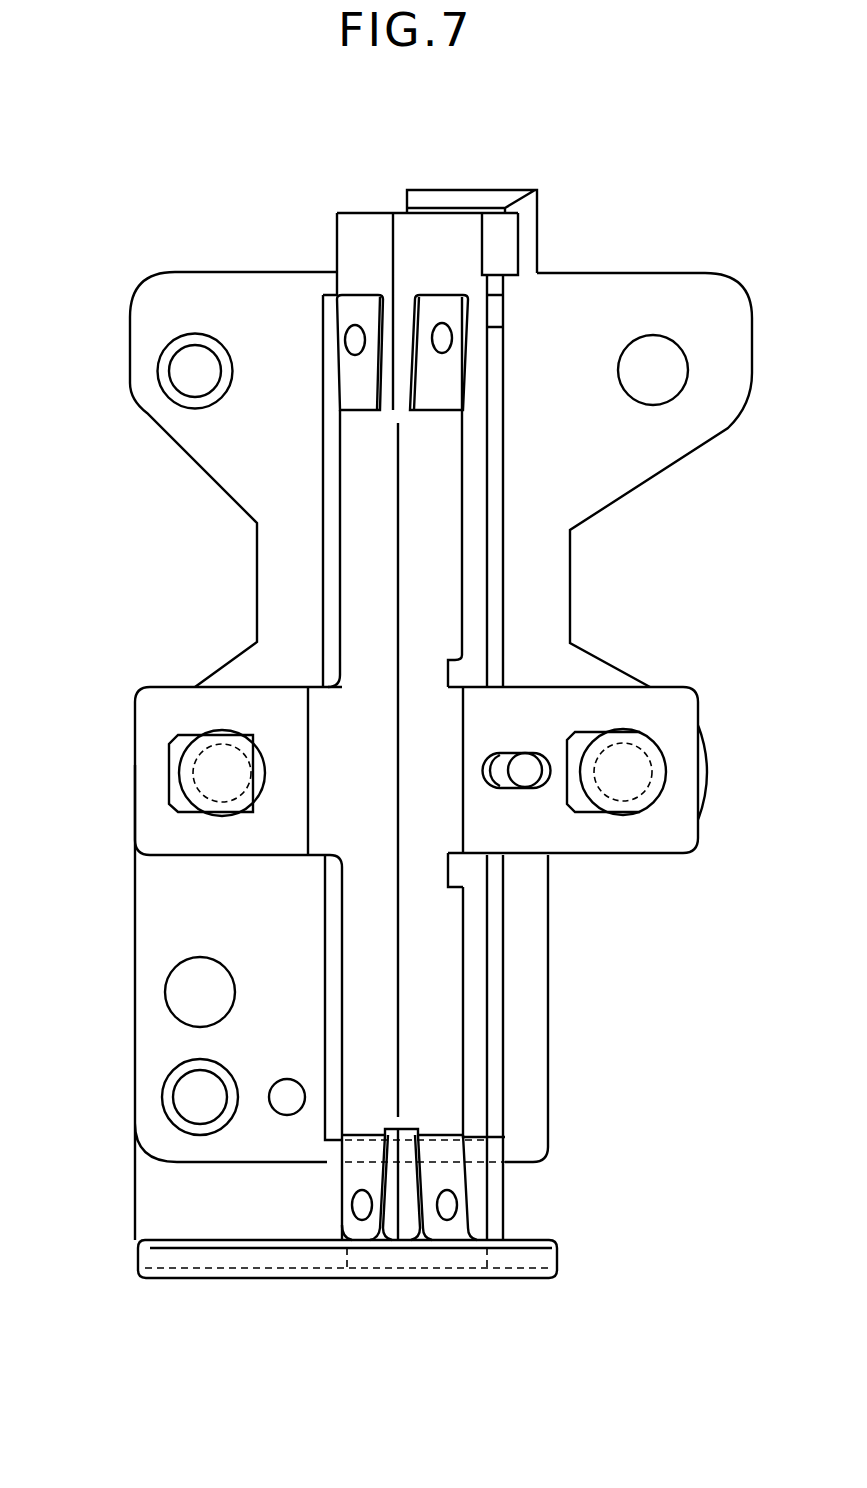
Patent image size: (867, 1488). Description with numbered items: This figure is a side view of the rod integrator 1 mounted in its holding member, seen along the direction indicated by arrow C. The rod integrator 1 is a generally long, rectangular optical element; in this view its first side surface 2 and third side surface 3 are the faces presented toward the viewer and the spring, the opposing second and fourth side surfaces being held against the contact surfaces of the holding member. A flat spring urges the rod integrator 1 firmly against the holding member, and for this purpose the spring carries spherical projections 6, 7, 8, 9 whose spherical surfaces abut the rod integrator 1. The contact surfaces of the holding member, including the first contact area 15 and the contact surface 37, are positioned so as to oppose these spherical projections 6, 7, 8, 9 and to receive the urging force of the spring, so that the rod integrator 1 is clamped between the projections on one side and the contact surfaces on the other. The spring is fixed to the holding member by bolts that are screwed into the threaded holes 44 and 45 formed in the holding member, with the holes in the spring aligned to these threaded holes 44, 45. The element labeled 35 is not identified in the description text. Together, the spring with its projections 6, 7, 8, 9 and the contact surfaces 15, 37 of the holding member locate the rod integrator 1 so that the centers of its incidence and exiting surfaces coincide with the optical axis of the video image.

The rod integrator 1 is at (372, 207).
The first side surface 2 is at (353, 240).
The third side surface 3 is at (470, 597).
The spherical projection 6 is at (443, 338).
The spherical projection 7 is at (447, 1208).
The spherical projection 8 is at (353, 343).
The spherical projection 9 is at (362, 1210).
The first contact area 15 is at (477, 1152).
The base plate 35 is at (390, 1270).
The contact surface 37 is at (365, 1153).
The threaded hole 44 is at (647, 752).
The threaded hole 45 is at (187, 735).